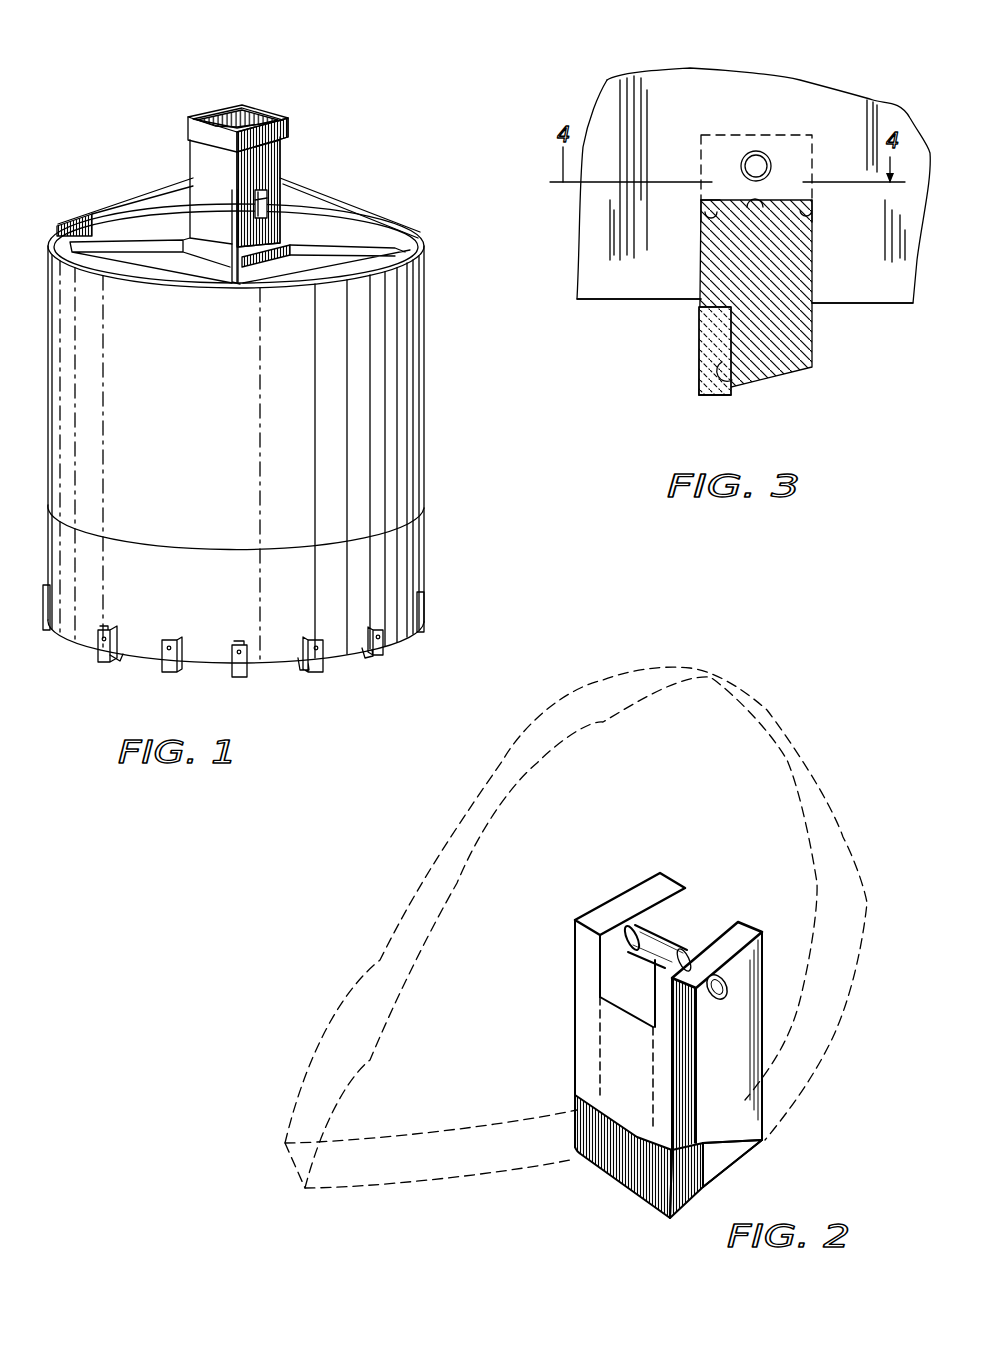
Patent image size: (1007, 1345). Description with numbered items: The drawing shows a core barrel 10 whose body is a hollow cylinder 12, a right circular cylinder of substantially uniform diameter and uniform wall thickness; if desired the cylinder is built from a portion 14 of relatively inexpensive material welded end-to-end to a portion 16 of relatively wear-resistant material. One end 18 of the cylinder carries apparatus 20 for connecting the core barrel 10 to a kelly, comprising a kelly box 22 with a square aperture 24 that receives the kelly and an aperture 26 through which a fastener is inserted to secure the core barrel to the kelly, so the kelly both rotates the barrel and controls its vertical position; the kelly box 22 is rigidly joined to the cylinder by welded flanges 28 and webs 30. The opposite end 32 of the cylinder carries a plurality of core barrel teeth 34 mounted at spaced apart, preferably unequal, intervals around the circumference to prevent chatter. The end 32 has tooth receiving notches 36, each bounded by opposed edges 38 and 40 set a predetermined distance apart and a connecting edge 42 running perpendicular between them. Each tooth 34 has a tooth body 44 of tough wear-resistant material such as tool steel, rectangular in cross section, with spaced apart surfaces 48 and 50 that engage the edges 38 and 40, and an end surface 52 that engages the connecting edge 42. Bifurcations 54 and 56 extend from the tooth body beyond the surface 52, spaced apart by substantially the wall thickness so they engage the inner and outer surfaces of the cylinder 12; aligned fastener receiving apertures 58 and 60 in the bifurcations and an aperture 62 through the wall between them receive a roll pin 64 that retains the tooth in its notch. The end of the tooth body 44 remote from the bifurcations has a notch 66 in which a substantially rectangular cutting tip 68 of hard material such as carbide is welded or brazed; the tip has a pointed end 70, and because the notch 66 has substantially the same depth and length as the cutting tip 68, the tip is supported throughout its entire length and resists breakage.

In FIG. 1, the core barrel 10 is at (478, 432).
In FIG. 3, the core barrel 10 is at (585, 68).
In FIG. 2, the core barrel 10 is at (338, 948).
In FIG. 1, the hollow cylinder 12 is at (423, 485).
In FIG. 3, the hollow cylinder 12 is at (840, 278).
In FIG. 2, the hollow cylinder 12 is at (362, 1049).
In FIG. 1, the portion formed from relatively inexpensive material 14 is at (367, 385).
In FIG. 1, the portion formed from relatively wear-resistant material 16 is at (383, 582).
In FIG. 1, the end of the core barrel cylinder 18 is at (68, 220).
In FIG. 1, the apparatus for connecting the core barrel to a kelly 20 is at (243, 158).
In FIG. 1, the kelly box 22 is at (279, 196).
In FIG. 1, the square aperture 24 is at (242, 117).
In FIG. 1, the aperture 26 is at (263, 193).
In FIG. 1, the flanges 28 is at (333, 220).
In FIG. 1, the webs 30 is at (343, 253).
In FIG. 1, the end of the core barrel cylinder remote from the end 18 32 is at (272, 665).
In FIG. 3, the end of the core barrel cylinder remote from the end 18 32 is at (628, 300).
In FIG. 2, the end of the core barrel cylinder remote from the end 18 32 is at (398, 1187).
In FIG. 1, the core barrel teeth 34 is at (227, 678).
In FIG. 3, the core barrel teeth 34 is at (747, 256).
In FIG. 2, the core barrel teeth 34 is at (685, 1062).
In FIG. 3, the tooth receiving notches 36 is at (712, 268).
In FIG. 3, the edge of the notch 38 is at (706, 208).
In FIG. 3, the edge of the notch 40 is at (812, 212).
In FIG. 3, the connecting edge 42 is at (705, 212).
In FIG. 2, the tooth body 44 is at (713, 1108).
In FIG. 3, the surface of the tooth body 48 is at (697, 283).
In FIG. 2, the surface of the tooth body 48 is at (656, 1088).
In FIG. 3, the surface of the tooth body 50 is at (820, 265).
In FIG. 2, the surface of the tooth body 50 is at (770, 1042).
In FIG. 3, the end surface 52 is at (756, 210).
In FIG. 2, the end surface 52 is at (607, 1003).
In FIG. 3, the bifurcation 54 is at (700, 160).
In FIG. 2, the bifurcation 54 is at (590, 938).
In FIG. 2, the bifurcation 56 is at (734, 1017).
In FIG. 3, the fastener receiving aperture 58 is at (742, 160).
In FIG. 2, the fastener receiving aperture 58 is at (627, 938).
In FIG. 2, the fastener receiving aperture 60 is at (727, 983).
In FIG. 3, the aperture 62 is at (758, 152).
In FIG. 3, the roll pin 64 is at (770, 172).
In FIG. 2, the roll pin 64 is at (663, 942).
In FIG. 3, the notch 66 is at (725, 385).
In FIG. 2, the notch 66 is at (707, 1187).
In FIG. 3, the cutting tip 68 is at (690, 350).
In FIG. 2, the cutting tip 68 is at (630, 1163).
In FIG. 3, the pointed end 70 is at (698, 394).
In FIG. 2, the pointed end 70 is at (623, 1187).